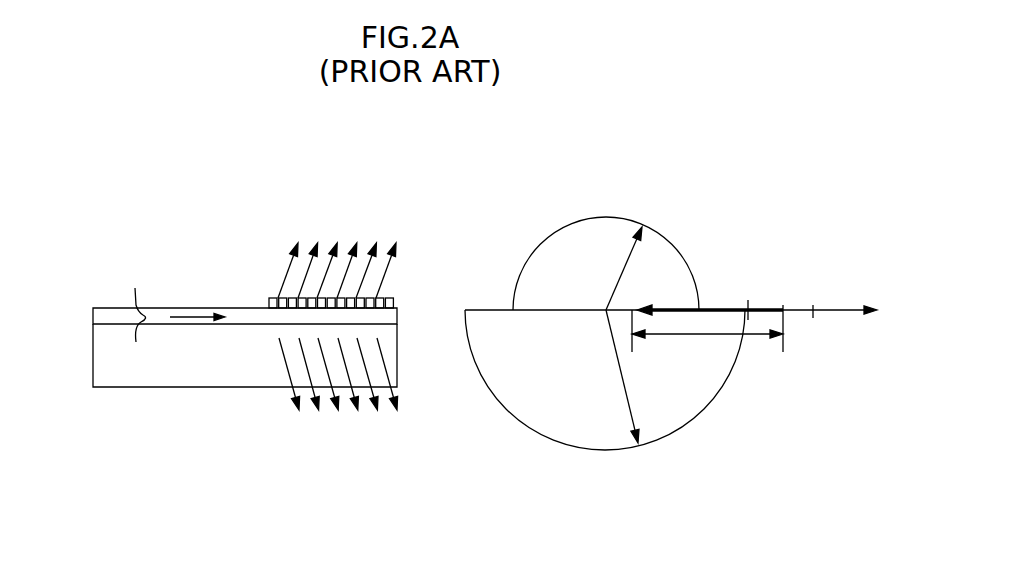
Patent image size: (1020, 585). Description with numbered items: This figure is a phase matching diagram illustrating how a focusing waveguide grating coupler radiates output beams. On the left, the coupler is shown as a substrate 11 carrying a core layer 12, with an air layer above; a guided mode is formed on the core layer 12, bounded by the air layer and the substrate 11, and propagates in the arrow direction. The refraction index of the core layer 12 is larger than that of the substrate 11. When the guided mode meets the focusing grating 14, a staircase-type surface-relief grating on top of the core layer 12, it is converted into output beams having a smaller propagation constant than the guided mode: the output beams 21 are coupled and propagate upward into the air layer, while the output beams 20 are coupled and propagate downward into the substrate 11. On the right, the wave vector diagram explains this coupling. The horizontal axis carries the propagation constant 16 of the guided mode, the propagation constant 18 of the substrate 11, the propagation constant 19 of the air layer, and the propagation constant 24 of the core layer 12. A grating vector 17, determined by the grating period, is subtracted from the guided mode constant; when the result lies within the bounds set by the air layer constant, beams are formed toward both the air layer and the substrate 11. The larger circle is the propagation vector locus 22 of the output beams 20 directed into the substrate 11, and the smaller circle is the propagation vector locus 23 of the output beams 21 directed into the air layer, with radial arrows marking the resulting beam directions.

The substrate 11 is at (93, 367).
The core layer 12 is at (93, 317).
The focusing grating 14 is at (268, 300).
The propagation constant of the guided mode 16 is at (785, 315).
The grating vector 17 is at (704, 334).
The propagation constant of the substrate 18 is at (748, 310).
The propagation constant of the air layer 19 is at (700, 308).
The output beams towards the substrate 20 is at (397, 393).
The output beams towards the air layer 21 is at (383, 280).
The propagation vector locus of substrate output beams 22 is at (673, 432).
The propagation vector locus of air output beams 23 is at (543, 242).
The propagation constant of the core layer 24 is at (813, 307).